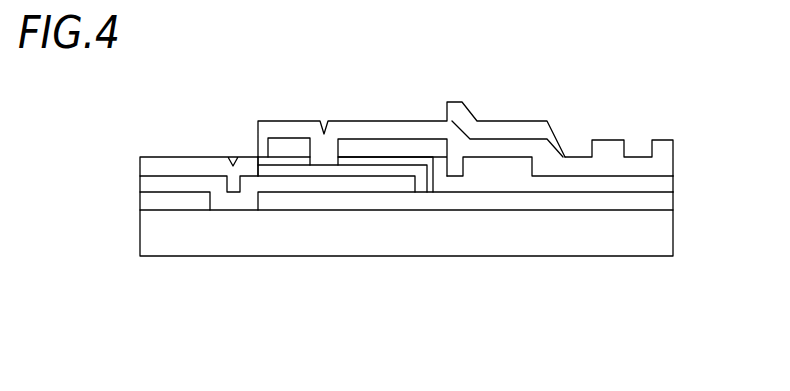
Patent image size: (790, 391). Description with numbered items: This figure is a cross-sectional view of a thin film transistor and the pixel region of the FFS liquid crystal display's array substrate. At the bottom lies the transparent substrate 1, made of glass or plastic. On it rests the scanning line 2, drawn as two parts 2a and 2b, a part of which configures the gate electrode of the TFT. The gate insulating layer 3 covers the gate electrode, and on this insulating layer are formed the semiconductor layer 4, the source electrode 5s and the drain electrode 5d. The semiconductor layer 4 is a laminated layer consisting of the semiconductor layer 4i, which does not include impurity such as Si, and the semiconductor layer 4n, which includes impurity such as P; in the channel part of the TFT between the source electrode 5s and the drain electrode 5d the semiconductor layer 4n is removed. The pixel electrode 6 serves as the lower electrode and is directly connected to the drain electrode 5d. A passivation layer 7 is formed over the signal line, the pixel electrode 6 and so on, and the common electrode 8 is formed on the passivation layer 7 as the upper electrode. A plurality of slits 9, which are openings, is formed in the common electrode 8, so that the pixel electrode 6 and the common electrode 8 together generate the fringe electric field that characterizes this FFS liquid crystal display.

The transparent substrate 1 is at (407, 232).
The scanning line 2 is at (283, 327).
The scanning line part 2a is at (303, 203).
The scanning line part 2b is at (192, 203).
The gate insulating layer 3 is at (658, 203).
The semiconductor layer 4 is at (170, 77).
The semiconductor layer 4i is at (285, 170).
The semiconductor layer 4n is at (283, 162).
The source electrode 5s is at (295, 147).
The drain electrode 5d is at (385, 150).
The pixel electrode 6 is at (647, 185).
The passivation layer 7 is at (657, 167).
The common electrode 8 is at (546, 128).
The slits 9 is at (642, 138).